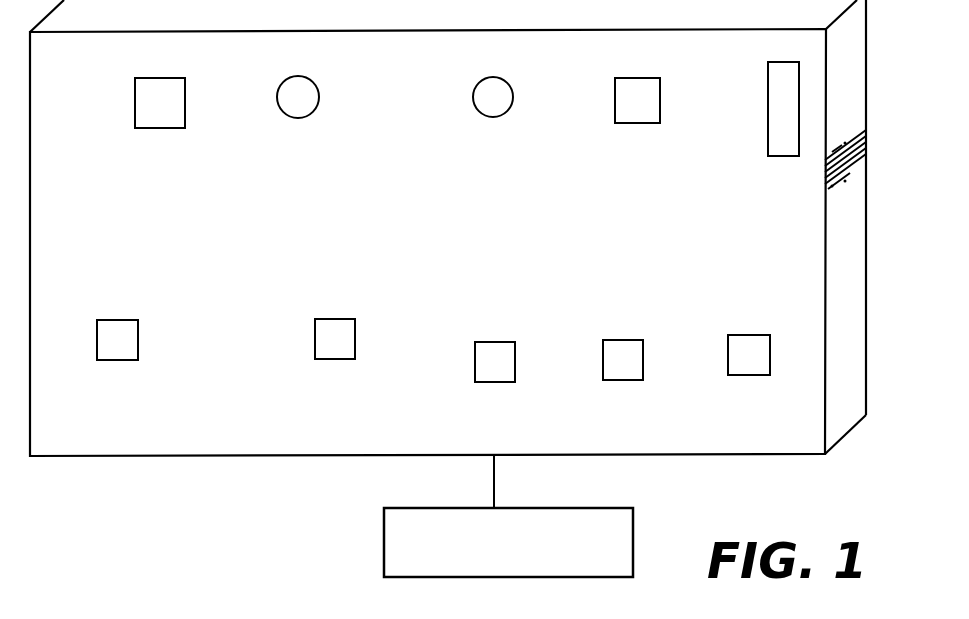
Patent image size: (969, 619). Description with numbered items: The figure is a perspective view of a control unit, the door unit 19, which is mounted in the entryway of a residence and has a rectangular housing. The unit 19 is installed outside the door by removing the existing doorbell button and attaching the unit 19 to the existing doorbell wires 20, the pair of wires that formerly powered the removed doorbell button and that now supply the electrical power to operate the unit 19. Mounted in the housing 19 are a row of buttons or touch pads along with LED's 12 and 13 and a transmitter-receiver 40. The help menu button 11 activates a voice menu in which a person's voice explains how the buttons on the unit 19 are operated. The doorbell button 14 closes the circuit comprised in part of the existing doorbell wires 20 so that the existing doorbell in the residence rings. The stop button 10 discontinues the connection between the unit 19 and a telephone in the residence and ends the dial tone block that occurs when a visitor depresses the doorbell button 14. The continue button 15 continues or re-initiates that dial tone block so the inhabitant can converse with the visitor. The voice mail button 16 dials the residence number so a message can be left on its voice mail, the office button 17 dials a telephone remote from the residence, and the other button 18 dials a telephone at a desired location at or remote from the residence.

The stop button 10 is at (126, 360).
The help menu button 11 is at (168, 128).
The LED 12 is at (298, 118).
The LED 13 is at (491, 117).
The doorbell button 14 is at (633, 123).
The continue button 15 is at (337, 359).
The voice mail button 16 is at (495, 382).
The office button 17 is at (626, 380).
The other button 18 is at (758, 375).
The door unit 19 is at (138, 484).
The existing doorbell wires 20 is at (633, 530).
The transmitter-receiver 40 is at (776, 156).